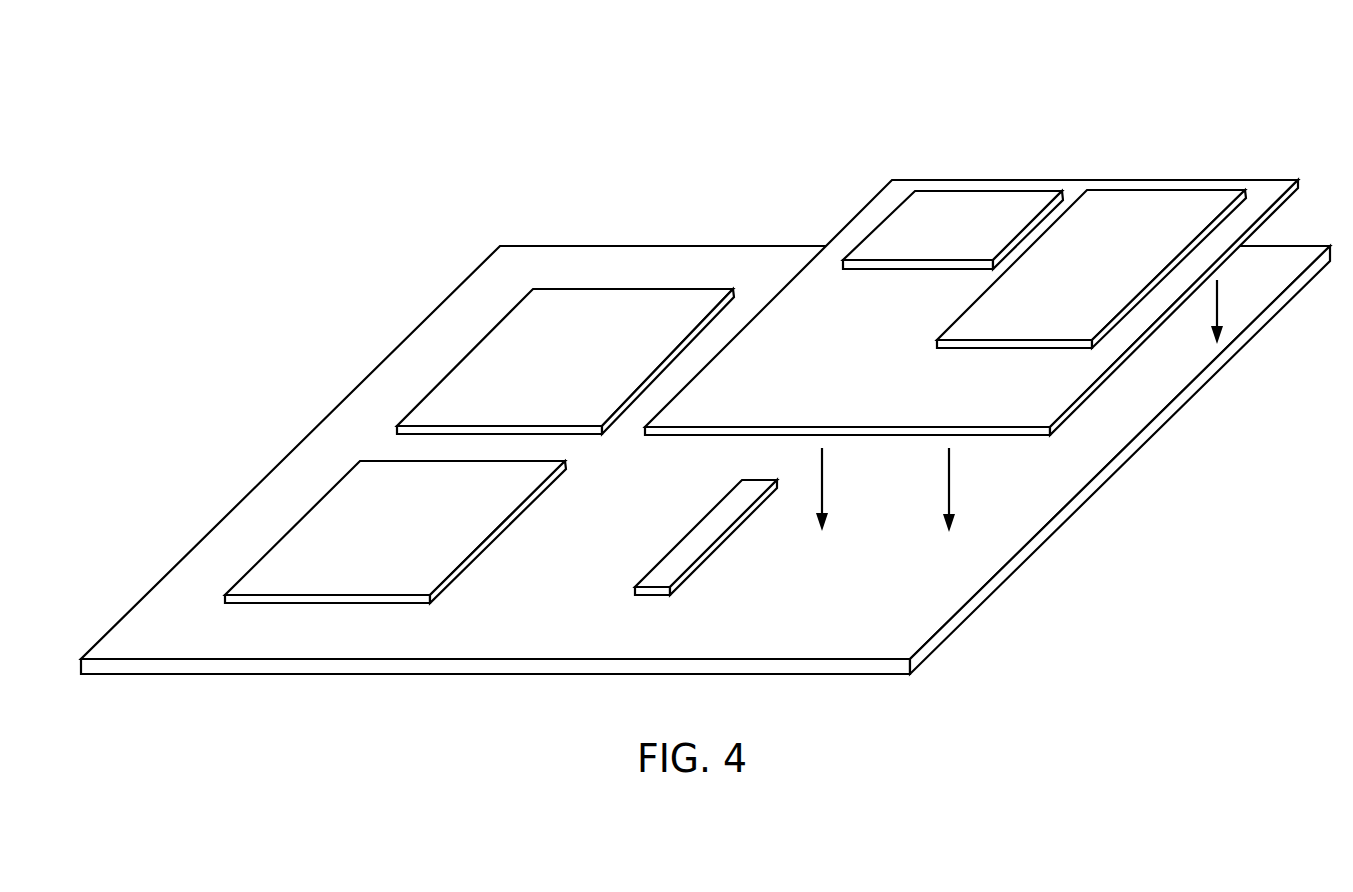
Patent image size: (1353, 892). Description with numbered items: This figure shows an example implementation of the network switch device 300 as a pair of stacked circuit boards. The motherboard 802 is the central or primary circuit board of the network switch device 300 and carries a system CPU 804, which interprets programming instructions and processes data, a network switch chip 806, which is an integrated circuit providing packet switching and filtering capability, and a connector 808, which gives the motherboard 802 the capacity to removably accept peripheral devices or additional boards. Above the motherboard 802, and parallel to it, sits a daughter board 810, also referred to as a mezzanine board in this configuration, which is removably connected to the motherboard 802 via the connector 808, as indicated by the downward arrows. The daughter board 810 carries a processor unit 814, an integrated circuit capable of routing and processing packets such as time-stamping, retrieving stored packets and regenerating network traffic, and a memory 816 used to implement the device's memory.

The network switch device 300 is at (1192, 128).
The motherboard 802 is at (1000, 572).
The system CPU 804 is at (633, 289).
The network switch chip 806 is at (333, 488).
The connector 808 is at (686, 533).
The daughter board 810 is at (938, 179).
The processor unit 814 is at (1002, 190).
The memory 816 is at (1113, 190).